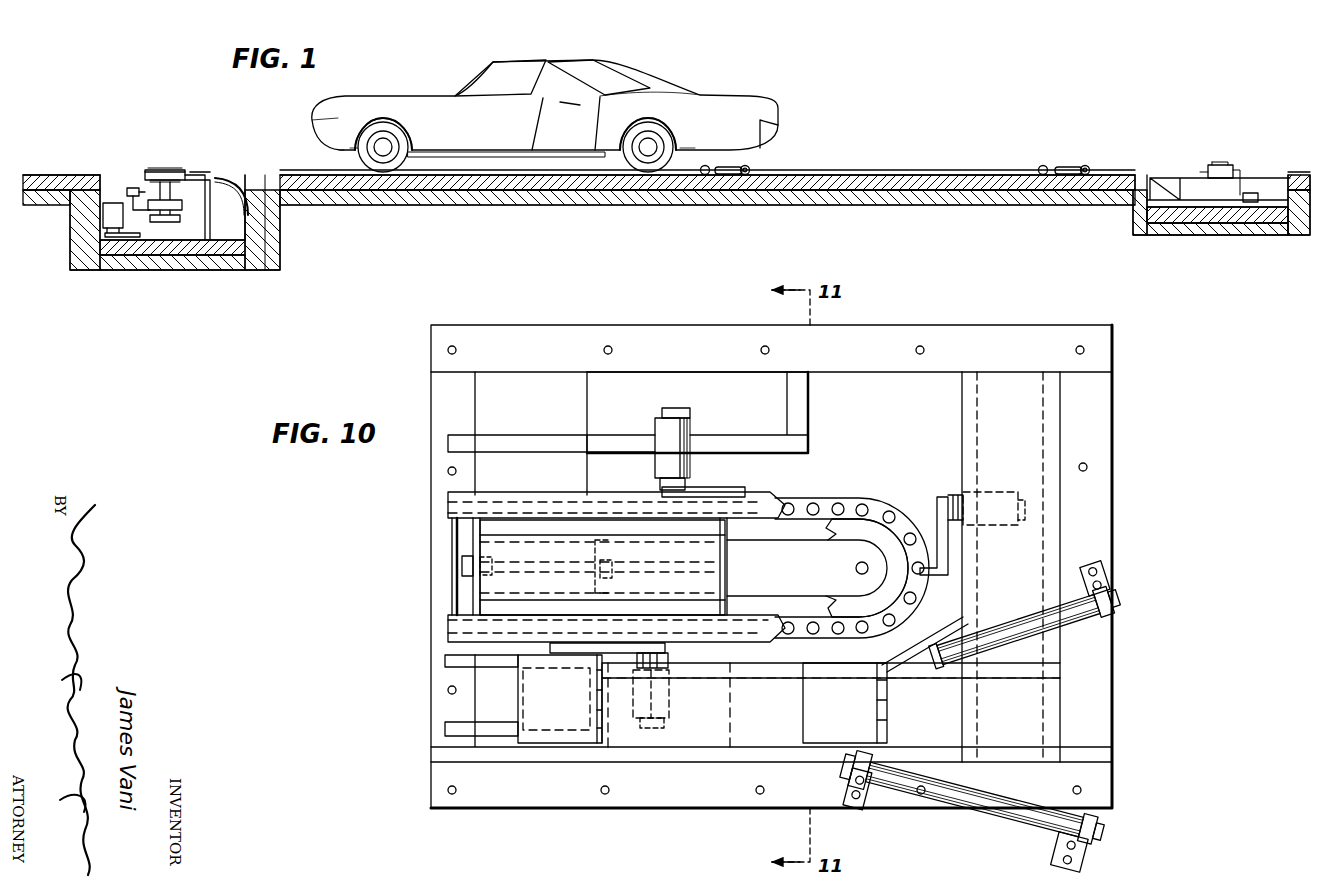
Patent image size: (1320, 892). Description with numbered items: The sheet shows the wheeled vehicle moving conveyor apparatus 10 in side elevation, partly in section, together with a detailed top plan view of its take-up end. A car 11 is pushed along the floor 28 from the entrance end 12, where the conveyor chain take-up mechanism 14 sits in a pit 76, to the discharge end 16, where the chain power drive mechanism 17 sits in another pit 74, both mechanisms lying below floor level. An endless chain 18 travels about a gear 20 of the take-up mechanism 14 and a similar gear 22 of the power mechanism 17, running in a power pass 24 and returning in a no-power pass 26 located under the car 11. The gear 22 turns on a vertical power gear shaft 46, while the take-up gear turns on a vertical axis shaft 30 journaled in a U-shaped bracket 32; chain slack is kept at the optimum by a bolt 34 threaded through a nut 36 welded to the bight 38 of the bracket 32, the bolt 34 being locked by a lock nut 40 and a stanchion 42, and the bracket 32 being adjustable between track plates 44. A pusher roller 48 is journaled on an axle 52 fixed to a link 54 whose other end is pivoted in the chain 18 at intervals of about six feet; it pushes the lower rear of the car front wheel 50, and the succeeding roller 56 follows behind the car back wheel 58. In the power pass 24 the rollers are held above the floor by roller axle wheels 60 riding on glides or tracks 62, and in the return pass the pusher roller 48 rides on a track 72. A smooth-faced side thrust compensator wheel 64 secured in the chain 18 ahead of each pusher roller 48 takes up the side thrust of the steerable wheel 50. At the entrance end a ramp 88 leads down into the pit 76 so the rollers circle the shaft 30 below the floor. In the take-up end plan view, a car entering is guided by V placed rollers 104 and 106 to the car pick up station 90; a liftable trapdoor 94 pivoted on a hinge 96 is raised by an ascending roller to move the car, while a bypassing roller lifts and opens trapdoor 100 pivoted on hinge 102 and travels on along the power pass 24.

In FIG. 1, the wheeled vehicle moving conveyor apparatus 10 is at (912, 152).
In FIG. 1, the car 11 is at (650, 76).
In FIG. 1, the entrance end 12 is at (1221, 185).
In FIG. 10, the entrance end 12 is at (1122, 380).
In FIG. 1, the conveyor chain take-up mechanism 14 is at (1196, 192).
In FIG. 1, the discharge end 16 is at (158, 195).
In FIG. 1, the chain power drive mechanism 17 is at (110, 186).
In FIG. 10, the chain 18 is at (845, 504).
In FIG. 10, the gear 20 is at (868, 520).
In FIG. 1, the gear 22 is at (185, 172).
In FIG. 10, the power pass 24 is at (440, 697).
In FIG. 10, the no-power pass 26 is at (445, 398).
In FIG. 1, the floor 28 is at (795, 178).
In FIG. 1, the vertical axis shaft 30 is at (1226, 163).
In FIG. 10, the vertical axis shaft 30 is at (807, 568).
In FIG. 10, the U-shaped bracket 32 is at (788, 550).
In FIG. 10, the bolt 34 is at (462, 563).
In FIG. 10, the nut 36 is at (612, 558).
In FIG. 10, the bight 38 is at (612, 582).
In FIG. 10, the lock nut 40 is at (498, 525).
In FIG. 10, the stanchion 42 is at (462, 600).
In FIG. 10, the track plates 44 is at (760, 500).
In FIG. 1, the power gear shaft 46 is at (166, 168).
In FIG. 1, the pusher roller 48 is at (135, 188).
In FIG. 10, the pusher roller 48 is at (690, 432).
In FIG. 1, the car front wheel 50 is at (380, 170).
In FIG. 10, the axle 52 is at (700, 490).
In FIG. 1, the link 54 is at (730, 176).
In FIG. 10, the link 54 is at (738, 492).
In FIG. 1, the succeeding roller 56 is at (748, 174).
In FIG. 1, the car back wheel 58 is at (655, 172).
In FIG. 10, the roller axle wheels 60 is at (662, 413).
In FIG. 10, the glides or tracks 62 is at (492, 668).
In FIG. 1, the side thrust compensator wheel 64 is at (705, 176).
In FIG. 10, the track 72 is at (567, 437).
In FIG. 1, the pit 74 is at (235, 238).
In FIG. 1, the pit 76 is at (1283, 203).
In FIG. 10, the ramp 88 is at (775, 440).
In FIG. 10, the car pick up station 90 is at (770, 735).
In FIG. 10, the liftable trapdoor 94 is at (823, 730).
In FIG. 10, the hinge 96 is at (890, 738).
In FIG. 10, the trapdoor 100 is at (548, 730).
In FIG. 10, the hinge 102 is at (600, 745).
In FIG. 10, the V placed roller 104 is at (1015, 630).
In FIG. 10, the V placed roller 106 is at (1030, 815).